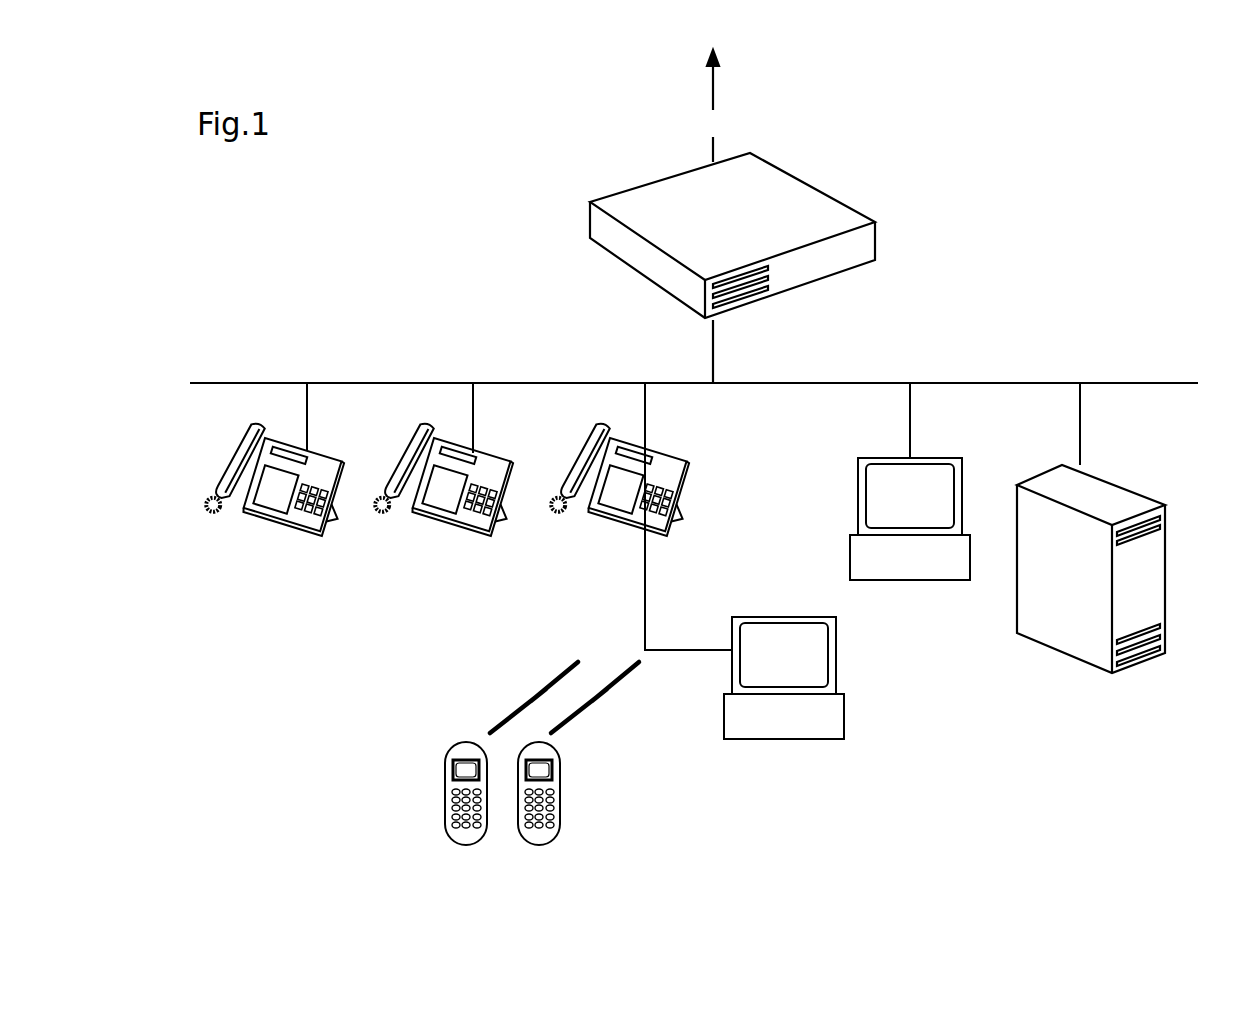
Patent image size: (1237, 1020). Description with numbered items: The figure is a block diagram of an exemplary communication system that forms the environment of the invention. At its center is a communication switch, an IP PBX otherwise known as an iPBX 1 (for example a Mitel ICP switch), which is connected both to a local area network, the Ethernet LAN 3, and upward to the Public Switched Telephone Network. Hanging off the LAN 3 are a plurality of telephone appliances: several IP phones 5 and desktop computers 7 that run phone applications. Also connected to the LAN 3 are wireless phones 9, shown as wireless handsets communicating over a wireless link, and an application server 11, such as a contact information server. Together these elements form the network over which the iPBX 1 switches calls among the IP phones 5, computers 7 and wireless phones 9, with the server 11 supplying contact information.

The iPBX 1 is at (808, 180).
The Ethernet LAN 3 is at (972, 383).
The IP phones 5 is at (323, 458).
The desktop computers 7 is at (858, 495).
The wireless phones 9 is at (530, 845).
The application server 11 is at (1153, 582).